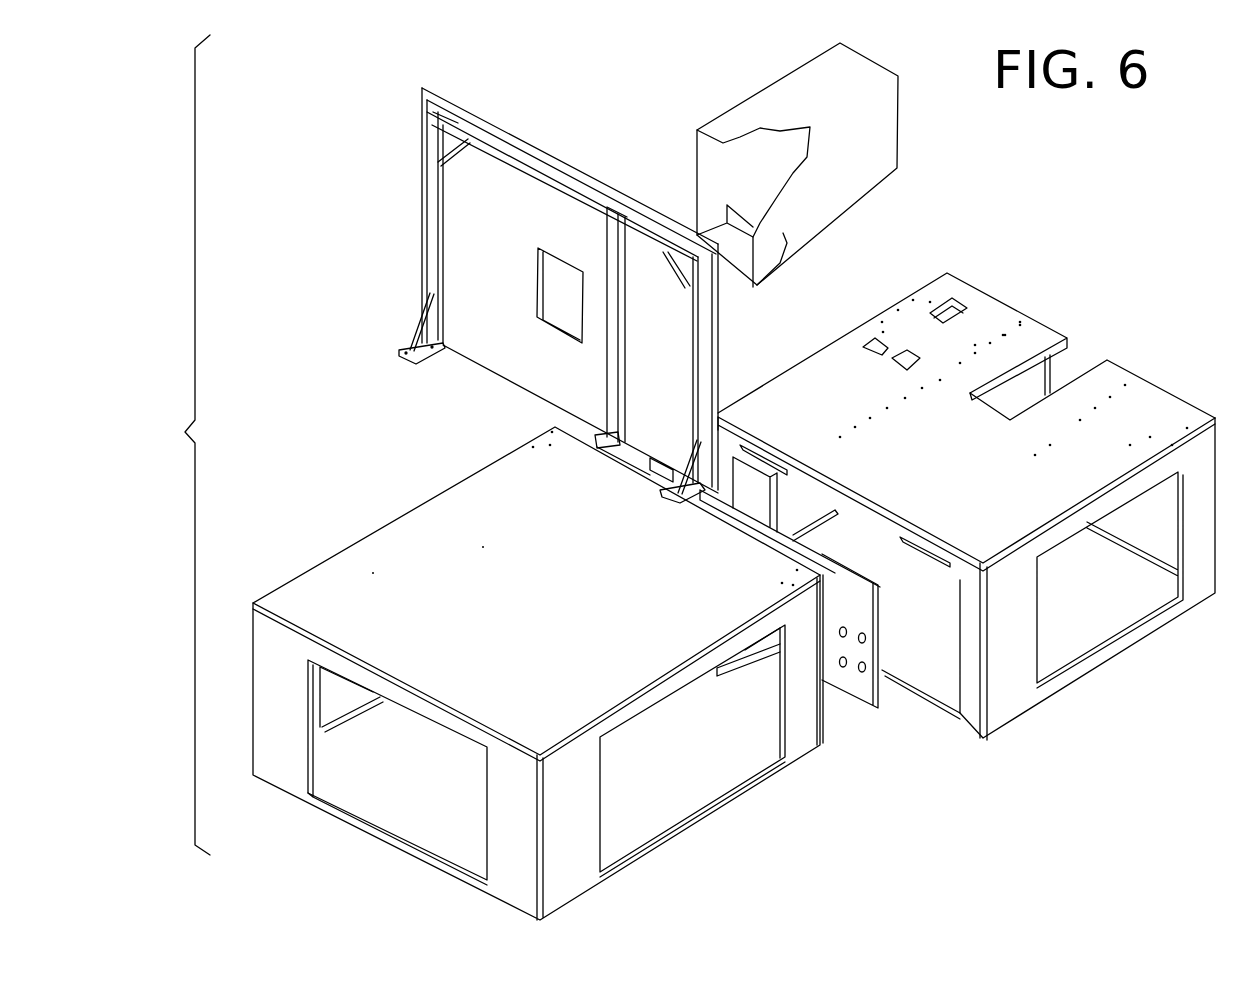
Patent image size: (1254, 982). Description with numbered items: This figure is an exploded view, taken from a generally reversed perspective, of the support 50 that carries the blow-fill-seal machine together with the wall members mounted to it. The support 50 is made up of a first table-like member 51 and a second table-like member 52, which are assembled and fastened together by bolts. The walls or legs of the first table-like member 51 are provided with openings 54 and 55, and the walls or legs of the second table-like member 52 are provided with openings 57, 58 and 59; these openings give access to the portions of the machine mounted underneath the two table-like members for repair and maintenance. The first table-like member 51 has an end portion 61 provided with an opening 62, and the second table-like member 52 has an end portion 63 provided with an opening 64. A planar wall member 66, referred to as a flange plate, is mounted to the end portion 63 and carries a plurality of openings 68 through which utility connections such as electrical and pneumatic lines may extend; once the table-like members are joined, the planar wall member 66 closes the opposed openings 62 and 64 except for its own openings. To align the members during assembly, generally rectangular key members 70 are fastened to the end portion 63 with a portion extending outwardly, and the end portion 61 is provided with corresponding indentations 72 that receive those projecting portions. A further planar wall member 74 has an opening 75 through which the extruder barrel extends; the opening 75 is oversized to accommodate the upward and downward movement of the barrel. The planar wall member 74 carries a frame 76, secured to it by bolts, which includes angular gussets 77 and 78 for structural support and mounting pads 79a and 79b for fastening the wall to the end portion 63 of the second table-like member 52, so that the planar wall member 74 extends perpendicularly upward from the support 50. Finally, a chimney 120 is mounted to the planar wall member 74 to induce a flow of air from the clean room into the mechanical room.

The support 50 is at (983, 236).
The first table-like member 51 is at (993, 320).
The second table-like member 52 is at (403, 513).
The opening 54 is at (1102, 615).
The opening 55 is at (790, 500).
The opening 57 is at (655, 798).
The opening 58 is at (323, 697).
The opening 59 is at (450, 810).
The end portion 61 is at (991, 668).
The opening 62 is at (952, 673).
The end portion 63 is at (803, 707).
The opening 64 is at (767, 680).
The planar wall member 66 is at (877, 710).
The openings 68 is at (860, 672).
The key member 70 is at (740, 488).
The indentation 72 is at (760, 447).
The planar wall member 74 is at (535, 147).
The opening 75 is at (563, 272).
The frame 76 is at (503, 167).
The angular gusset 77 is at (415, 340).
The angular gusset 78 is at (658, 485).
The mounting pad 79a is at (437, 351).
The mounting pad 79b is at (678, 503).
The chimney 120 is at (788, 92).